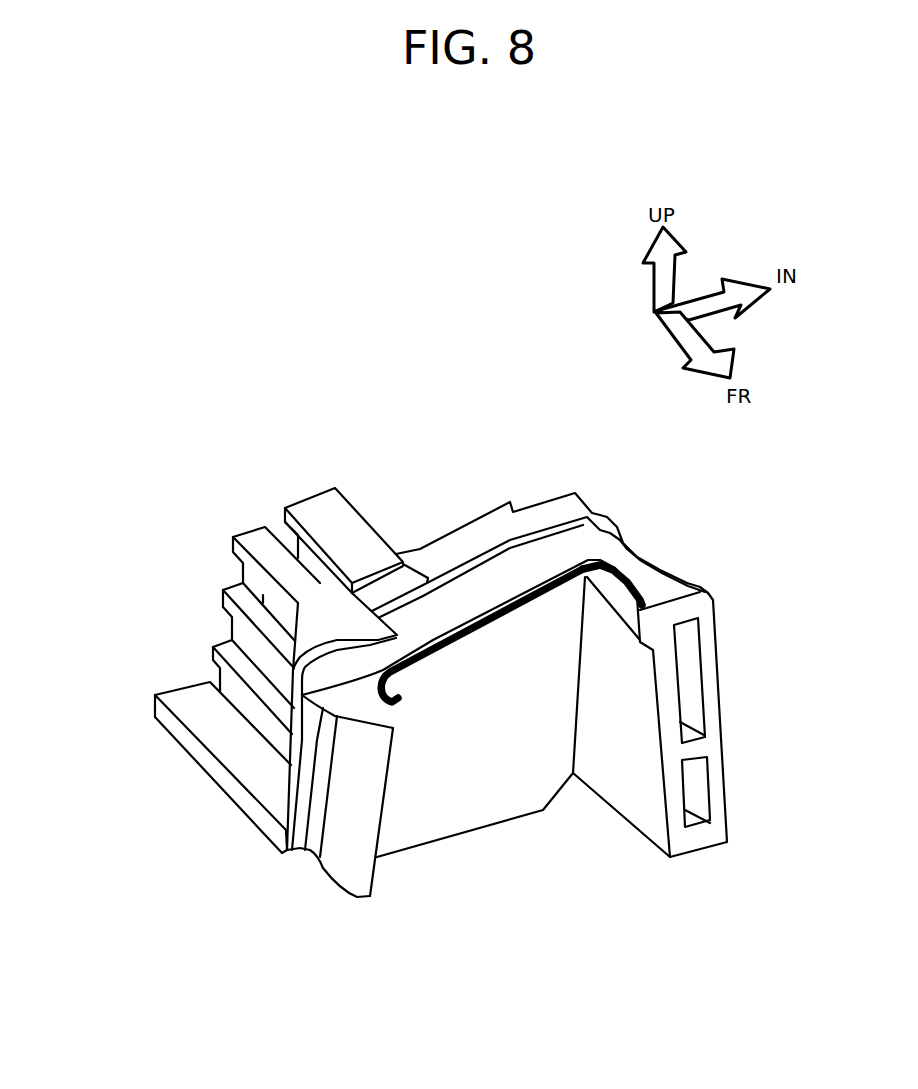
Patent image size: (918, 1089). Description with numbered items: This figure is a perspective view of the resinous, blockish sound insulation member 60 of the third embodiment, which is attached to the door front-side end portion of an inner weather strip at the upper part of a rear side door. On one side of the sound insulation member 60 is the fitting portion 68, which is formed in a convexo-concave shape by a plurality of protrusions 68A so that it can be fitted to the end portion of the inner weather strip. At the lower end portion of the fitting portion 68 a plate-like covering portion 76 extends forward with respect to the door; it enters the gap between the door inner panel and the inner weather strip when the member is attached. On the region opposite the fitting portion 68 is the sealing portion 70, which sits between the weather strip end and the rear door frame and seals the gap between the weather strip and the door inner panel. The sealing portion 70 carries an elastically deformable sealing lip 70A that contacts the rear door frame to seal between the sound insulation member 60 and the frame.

The sound insulation member 60 is at (257, 432).
The fitting portion 68 is at (227, 582).
The protrusions 68A is at (300, 503).
The sealing portion 70 is at (460, 585).
The sealing lip 70A is at (527, 592).
The covering portion 76 is at (180, 690).